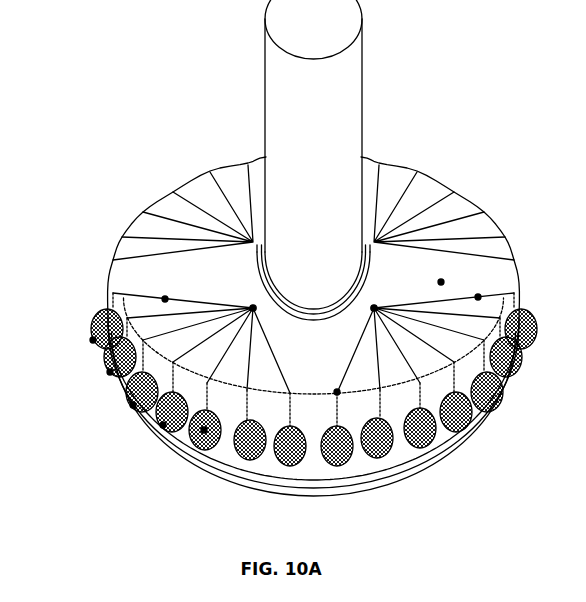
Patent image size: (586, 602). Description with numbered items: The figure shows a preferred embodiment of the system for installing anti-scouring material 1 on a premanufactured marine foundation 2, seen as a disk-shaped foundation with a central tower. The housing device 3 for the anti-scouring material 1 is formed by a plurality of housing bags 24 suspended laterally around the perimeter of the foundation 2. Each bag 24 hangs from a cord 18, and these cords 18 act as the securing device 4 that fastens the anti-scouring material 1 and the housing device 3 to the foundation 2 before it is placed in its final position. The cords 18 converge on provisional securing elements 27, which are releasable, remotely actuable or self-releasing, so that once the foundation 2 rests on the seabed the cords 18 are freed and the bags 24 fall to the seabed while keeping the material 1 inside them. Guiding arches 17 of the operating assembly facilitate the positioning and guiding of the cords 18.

The anti-scouring material 1 is at (204, 430).
The marine foundation 2 is at (441, 282).
The housing device 3 is at (133, 405).
The securing device 4 is at (253, 308).
The guiding arches 17 is at (337, 392).
The cord 18 is at (478, 297).
The housing bags 24 is at (163, 425).
The provisional securing element 27 is at (374, 308).